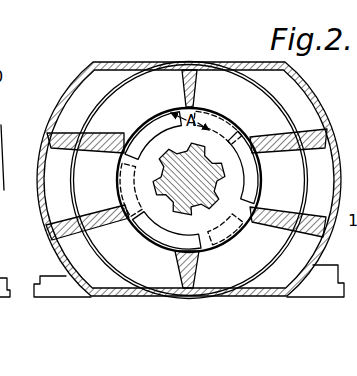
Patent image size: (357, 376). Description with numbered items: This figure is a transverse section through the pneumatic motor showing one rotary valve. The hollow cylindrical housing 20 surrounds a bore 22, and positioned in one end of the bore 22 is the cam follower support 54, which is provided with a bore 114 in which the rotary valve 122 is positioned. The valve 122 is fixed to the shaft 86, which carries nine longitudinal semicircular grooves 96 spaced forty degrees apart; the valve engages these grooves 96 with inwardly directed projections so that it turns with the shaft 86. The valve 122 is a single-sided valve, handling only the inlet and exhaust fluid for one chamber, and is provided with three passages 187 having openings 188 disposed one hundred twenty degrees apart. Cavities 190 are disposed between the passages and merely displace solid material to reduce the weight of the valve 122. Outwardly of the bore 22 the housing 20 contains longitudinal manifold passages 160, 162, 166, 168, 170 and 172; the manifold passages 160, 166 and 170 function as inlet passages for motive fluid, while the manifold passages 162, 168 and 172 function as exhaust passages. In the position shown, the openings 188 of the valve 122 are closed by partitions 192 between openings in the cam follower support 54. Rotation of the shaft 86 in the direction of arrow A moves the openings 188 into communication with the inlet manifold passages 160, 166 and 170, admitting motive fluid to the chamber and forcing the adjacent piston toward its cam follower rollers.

The housing 20 is at (186, 62).
The bore 22 is at (205, 70).
The cam follower support 54 is at (260, 114).
The shaft 86 is at (195, 167).
The longitudinal grooves 96 is at (158, 186).
The bore 114 is at (255, 158).
The rotary valve 122 is at (184, 100).
The manifold passage 160 is at (301, 88).
The manifold passage 162 is at (3, 150).
The manifold passage 166 is at (320, 257).
The manifold passage 168 is at (58, 218).
The manifold passage 170 is at (38, 152).
The manifold passage 172 is at (68, 89).
The passages 187 is at (232, 130).
The openings 188 is at (207, 101).
The cavities 190 is at (160, 118).
The partitions 192 is at (198, 92).